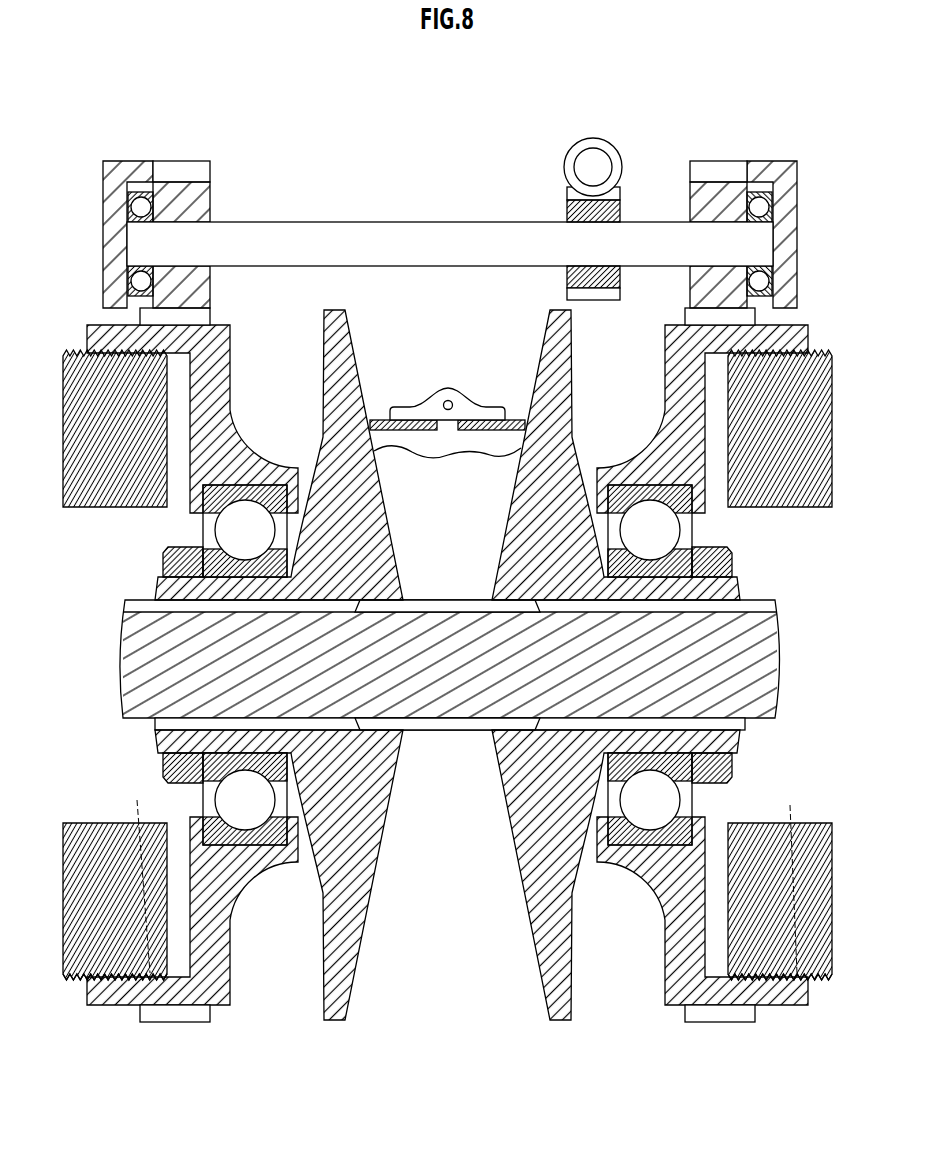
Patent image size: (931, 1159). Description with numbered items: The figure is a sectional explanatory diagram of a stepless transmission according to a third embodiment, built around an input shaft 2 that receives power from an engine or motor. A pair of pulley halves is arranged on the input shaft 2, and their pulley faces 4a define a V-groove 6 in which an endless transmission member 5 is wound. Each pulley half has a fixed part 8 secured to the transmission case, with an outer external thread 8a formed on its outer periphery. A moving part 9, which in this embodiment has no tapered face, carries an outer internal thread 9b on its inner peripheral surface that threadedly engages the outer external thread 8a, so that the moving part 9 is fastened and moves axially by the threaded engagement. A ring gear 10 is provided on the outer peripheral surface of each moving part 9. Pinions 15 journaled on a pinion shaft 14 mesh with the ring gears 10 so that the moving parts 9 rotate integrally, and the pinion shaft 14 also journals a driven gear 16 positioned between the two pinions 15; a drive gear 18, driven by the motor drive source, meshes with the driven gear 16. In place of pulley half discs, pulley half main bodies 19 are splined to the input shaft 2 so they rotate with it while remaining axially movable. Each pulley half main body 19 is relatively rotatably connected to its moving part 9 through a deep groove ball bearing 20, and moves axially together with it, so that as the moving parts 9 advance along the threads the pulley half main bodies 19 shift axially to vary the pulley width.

The input shaft 2 is at (777, 628).
The pulley face 4a is at (370, 398).
The endless transmission member 5 is at (428, 402).
The V-groove 6 is at (409, 341).
The fixed part 8 is at (85, 510).
The outer external thread 8a is at (108, 972).
The moving part 9 is at (237, 387).
The outer internal thread 9b is at (462, 872).
The ring gear 10 is at (218, 312).
The pinion shaft 14 is at (348, 222).
The pinion 15 is at (185, 160).
The driven gear 16 is at (562, 200).
The drive gear 18 is at (600, 138).
The pulley half main body 19 is at (355, 973).
The deep groove ball bearing 20 is at (252, 807).